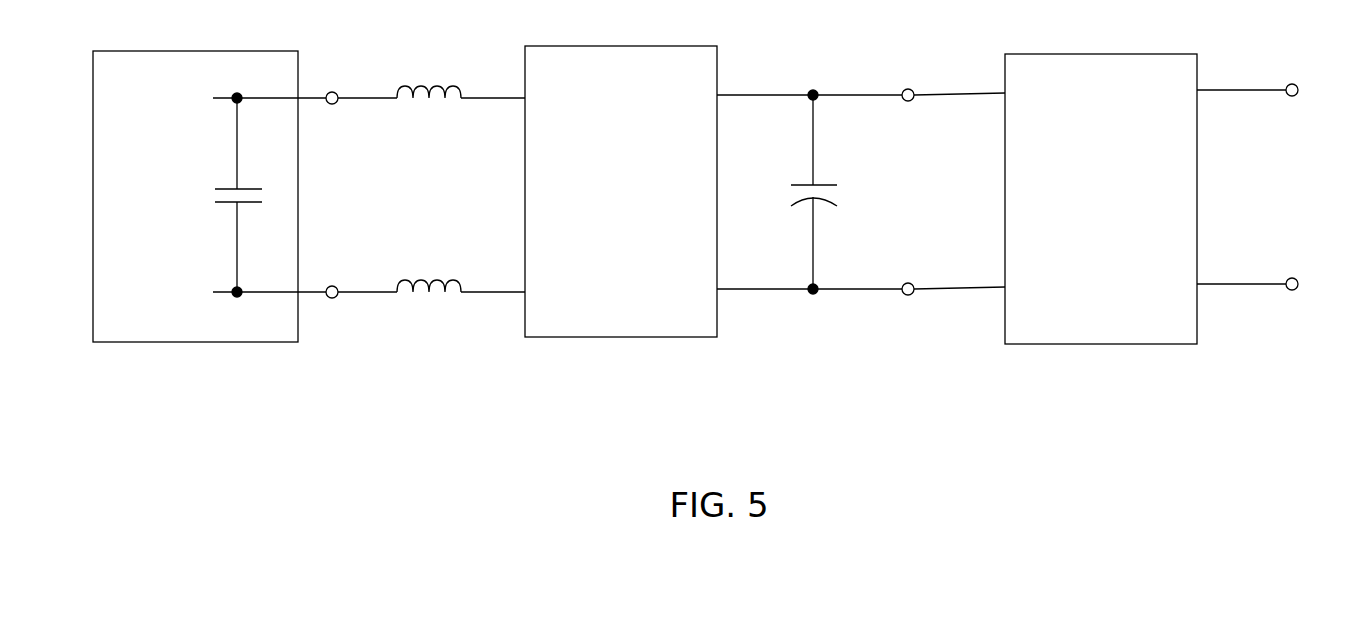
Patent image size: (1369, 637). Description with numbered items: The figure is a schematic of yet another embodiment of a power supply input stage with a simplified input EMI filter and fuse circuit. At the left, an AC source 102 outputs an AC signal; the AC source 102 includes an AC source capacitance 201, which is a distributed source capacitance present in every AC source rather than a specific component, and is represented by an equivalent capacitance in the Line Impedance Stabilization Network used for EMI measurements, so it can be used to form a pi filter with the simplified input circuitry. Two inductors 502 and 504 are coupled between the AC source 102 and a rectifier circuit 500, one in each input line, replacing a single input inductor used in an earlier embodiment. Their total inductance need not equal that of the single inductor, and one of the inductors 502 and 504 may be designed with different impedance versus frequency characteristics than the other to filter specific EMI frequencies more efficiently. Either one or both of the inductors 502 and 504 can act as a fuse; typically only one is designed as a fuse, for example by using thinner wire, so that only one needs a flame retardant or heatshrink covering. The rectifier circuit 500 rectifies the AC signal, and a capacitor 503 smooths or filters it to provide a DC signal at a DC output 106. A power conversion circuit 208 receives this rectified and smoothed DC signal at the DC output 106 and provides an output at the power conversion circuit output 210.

The AC source 102 is at (195, 196).
The AC source capacitance 201 is at (272, 195).
The inductor 502 is at (431, 80).
The inductor 504 is at (431, 274).
The rectifier circuit 500 is at (621, 191).
The capacitor 503 is at (812, 192).
The DC output 106 is at (938, 192).
The power conversion circuit 208 is at (1101, 199).
The power conversion circuit output 210 is at (1272, 187).